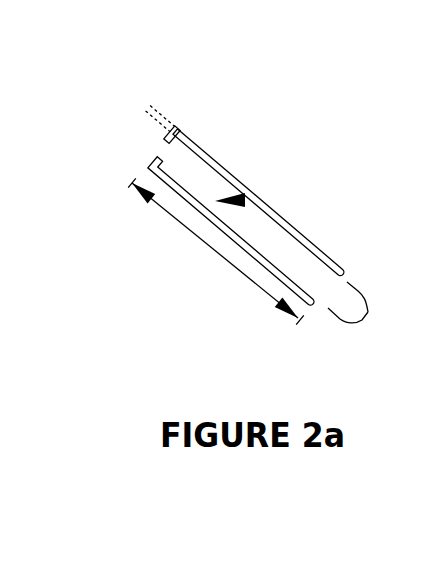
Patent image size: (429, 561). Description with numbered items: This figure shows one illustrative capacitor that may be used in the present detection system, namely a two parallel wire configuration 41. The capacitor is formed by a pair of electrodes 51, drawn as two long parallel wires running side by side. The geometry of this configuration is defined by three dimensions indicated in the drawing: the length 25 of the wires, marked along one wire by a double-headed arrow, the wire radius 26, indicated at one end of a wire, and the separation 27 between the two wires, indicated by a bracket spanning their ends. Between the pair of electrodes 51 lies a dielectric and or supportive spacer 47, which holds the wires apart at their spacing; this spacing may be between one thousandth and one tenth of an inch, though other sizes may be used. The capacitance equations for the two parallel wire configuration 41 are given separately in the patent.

The two parallel wire configuration 41 is at (336, 94).
The electrodes 51 is at (219, 163).
The wire radius 26 is at (148, 113).
The dielectric and or supportive spacer 47 is at (245, 200).
The length 25 is at (217, 252).
The separation 27 is at (360, 310).